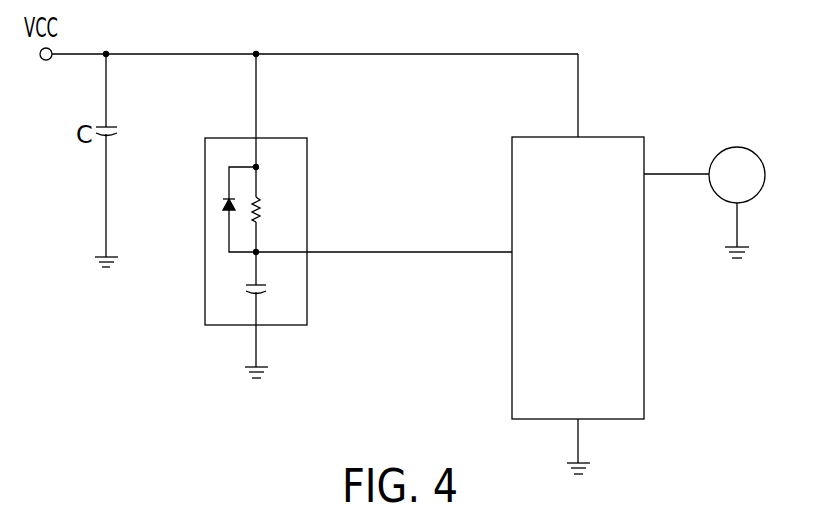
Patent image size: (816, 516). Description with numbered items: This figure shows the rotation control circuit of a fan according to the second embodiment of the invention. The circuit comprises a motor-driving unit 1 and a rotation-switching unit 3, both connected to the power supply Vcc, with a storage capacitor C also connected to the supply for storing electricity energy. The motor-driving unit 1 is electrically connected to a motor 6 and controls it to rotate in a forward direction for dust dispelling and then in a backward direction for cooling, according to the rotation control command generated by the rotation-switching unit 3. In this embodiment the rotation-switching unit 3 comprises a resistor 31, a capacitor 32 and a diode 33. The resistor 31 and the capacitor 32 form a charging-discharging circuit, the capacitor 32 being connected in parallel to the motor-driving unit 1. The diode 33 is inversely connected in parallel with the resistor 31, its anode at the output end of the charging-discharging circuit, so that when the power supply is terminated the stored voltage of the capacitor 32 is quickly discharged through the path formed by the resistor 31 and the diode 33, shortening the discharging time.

The motor-driving unit 1 is at (523, 386).
The rotation-switching unit 3 is at (303, 287).
The resistor 31 is at (258, 204).
The capacitor 32 is at (254, 296).
The diode 33 is at (225, 201).
The motor 6 is at (727, 152).